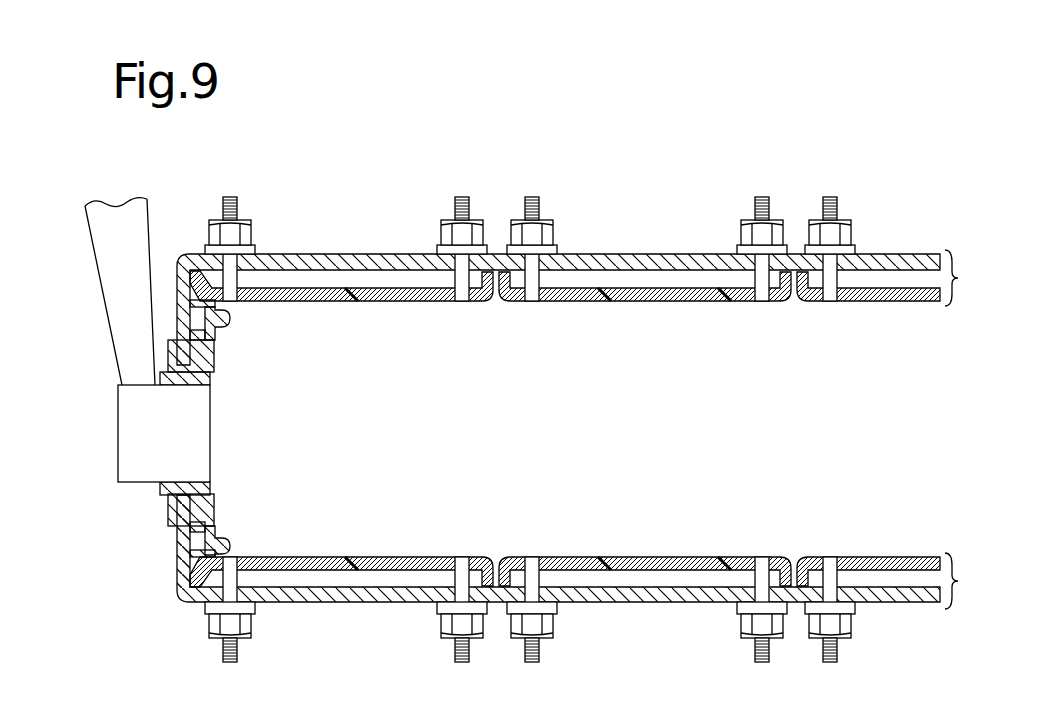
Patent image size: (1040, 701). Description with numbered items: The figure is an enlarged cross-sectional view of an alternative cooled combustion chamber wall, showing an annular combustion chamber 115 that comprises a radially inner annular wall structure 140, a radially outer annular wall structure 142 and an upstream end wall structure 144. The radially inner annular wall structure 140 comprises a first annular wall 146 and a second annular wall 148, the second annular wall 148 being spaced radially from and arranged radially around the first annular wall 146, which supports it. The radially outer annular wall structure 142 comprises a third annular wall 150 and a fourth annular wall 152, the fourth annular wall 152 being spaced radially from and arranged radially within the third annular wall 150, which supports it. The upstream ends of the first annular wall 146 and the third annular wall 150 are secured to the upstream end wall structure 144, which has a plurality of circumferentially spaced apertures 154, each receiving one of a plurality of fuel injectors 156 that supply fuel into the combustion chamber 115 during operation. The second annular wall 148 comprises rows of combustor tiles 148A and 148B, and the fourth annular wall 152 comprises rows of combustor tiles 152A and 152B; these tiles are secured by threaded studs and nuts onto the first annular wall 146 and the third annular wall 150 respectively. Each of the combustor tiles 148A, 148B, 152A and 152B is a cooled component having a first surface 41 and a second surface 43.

The combustion chamber 115 is at (692, 185).
The first surface 41 is at (563, 288).
The second surface 43 is at (580, 303).
The third annular wall 150 is at (697, 255).
The radially outer annular wall structure 142 is at (977, 278).
The combustor tiles 152A is at (376, 302).
The combustor tiles 152B is at (657, 303).
The fourth annular wall 152 is at (714, 302).
The apertures 154 is at (205, 370).
The fuel injectors 156 is at (138, 443).
The combustor tiles 148A is at (378, 556).
The combustor tiles 148B is at (621, 556).
The second annular wall 148 is at (757, 555).
The radially inner annular wall structure 140 is at (978, 581).
The upstream end wall structure 144 is at (180, 577).
The first annular wall 146 is at (712, 603).